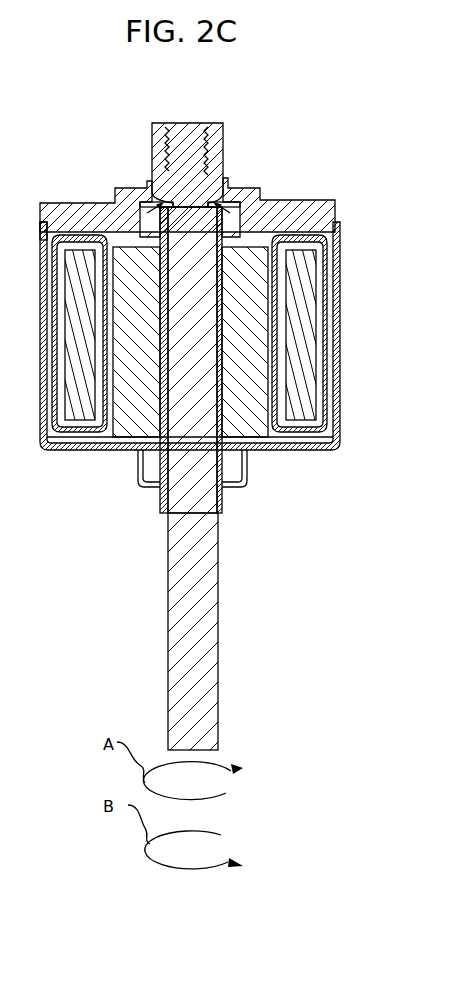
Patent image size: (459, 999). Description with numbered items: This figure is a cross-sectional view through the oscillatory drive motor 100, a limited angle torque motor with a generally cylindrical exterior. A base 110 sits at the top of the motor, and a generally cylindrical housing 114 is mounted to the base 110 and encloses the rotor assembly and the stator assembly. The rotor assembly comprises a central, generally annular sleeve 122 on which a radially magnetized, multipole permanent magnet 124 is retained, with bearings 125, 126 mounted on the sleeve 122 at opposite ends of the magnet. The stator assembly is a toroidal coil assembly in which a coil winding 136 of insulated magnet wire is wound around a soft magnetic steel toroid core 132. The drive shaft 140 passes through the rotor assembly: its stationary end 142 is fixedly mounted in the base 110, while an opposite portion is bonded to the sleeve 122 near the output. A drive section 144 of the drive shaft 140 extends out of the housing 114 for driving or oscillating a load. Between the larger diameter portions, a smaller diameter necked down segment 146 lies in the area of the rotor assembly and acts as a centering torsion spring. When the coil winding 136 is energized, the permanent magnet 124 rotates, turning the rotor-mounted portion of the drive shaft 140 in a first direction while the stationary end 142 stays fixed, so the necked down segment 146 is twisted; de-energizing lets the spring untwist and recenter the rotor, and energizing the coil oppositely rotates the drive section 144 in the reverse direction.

The oscillatory drive motor 100 is at (258, 140).
The base 110 is at (296, 212).
The housing 114 is at (340, 356).
The sleeve 122 is at (224, 460).
The permanent magnet 124 is at (118, 240).
The bearing 125 is at (141, 464).
The bearing 126 is at (232, 212).
The toroid core 132 is at (298, 280).
The coil winding 136 is at (326, 410).
The drive shaft 140 is at (221, 421).
The stationary end 142 is at (190, 148).
The drive section 144 is at (220, 648).
The necked down segment 146 is at (172, 366).